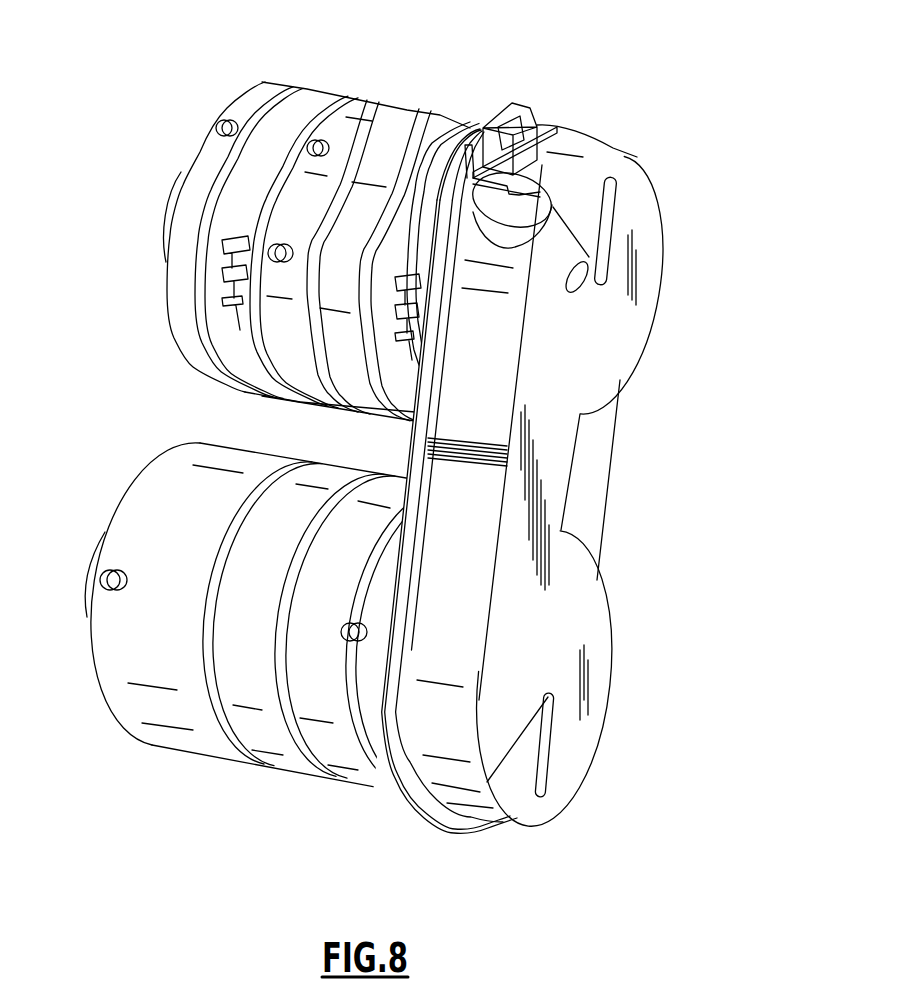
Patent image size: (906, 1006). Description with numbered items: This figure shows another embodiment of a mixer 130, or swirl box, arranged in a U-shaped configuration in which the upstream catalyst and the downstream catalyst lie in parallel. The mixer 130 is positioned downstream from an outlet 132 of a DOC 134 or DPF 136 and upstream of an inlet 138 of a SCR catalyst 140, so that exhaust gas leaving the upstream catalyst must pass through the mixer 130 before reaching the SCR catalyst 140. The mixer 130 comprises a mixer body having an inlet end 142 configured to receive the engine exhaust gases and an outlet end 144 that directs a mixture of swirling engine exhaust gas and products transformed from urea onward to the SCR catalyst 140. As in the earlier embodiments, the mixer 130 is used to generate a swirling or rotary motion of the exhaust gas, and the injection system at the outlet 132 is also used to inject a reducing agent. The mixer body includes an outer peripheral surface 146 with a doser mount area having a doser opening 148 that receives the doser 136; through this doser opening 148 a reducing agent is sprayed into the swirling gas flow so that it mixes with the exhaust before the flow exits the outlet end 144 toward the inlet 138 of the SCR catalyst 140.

The mixer 130 is at (562, 451).
The outlet 132 is at (582, 138).
The DOC 134 is at (257, 125).
The DPF 136 is at (433, 138).
The inlet 138 is at (405, 745).
The SCR catalyst 140 is at (322, 755).
The inlet end 142 is at (657, 292).
The outlet end 144 is at (583, 740).
The outer peripheral surface 146 is at (472, 273).
The doser opening 148 is at (517, 250).